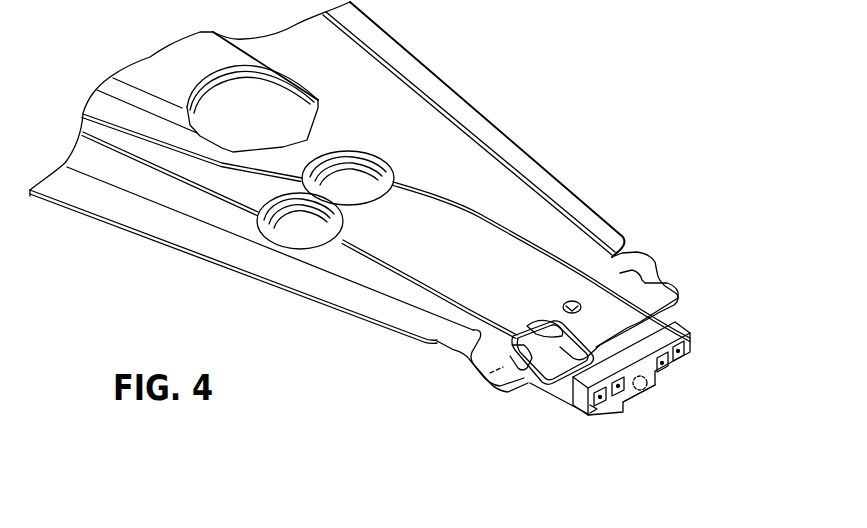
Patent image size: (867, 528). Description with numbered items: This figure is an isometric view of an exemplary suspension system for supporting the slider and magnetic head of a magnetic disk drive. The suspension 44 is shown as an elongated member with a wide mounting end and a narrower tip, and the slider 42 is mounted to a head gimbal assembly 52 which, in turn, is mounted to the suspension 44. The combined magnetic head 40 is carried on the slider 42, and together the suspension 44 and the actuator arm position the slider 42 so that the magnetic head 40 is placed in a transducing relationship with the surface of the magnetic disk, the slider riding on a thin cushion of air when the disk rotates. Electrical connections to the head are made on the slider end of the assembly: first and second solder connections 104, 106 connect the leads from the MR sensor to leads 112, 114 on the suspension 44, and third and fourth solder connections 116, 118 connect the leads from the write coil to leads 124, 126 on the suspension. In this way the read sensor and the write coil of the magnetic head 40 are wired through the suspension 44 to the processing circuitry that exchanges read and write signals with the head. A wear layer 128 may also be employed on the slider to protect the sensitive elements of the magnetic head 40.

The magnetic head 40 is at (650, 410).
The slider 42 is at (527, 398).
The suspension 44 is at (490, 116).
The head gimbal assembly 52 is at (590, 328).
The first solder connection 104 is at (588, 414).
The second solder connection 106 is at (684, 352).
The lead 112 is at (370, 260).
The lead 114 is at (542, 250).
The third solder connection 116 is at (620, 408).
The fourth solder connection 118 is at (666, 366).
The lead 124 is at (413, 280).
The lead 126 is at (470, 213).
The wear layer 128 is at (547, 412).